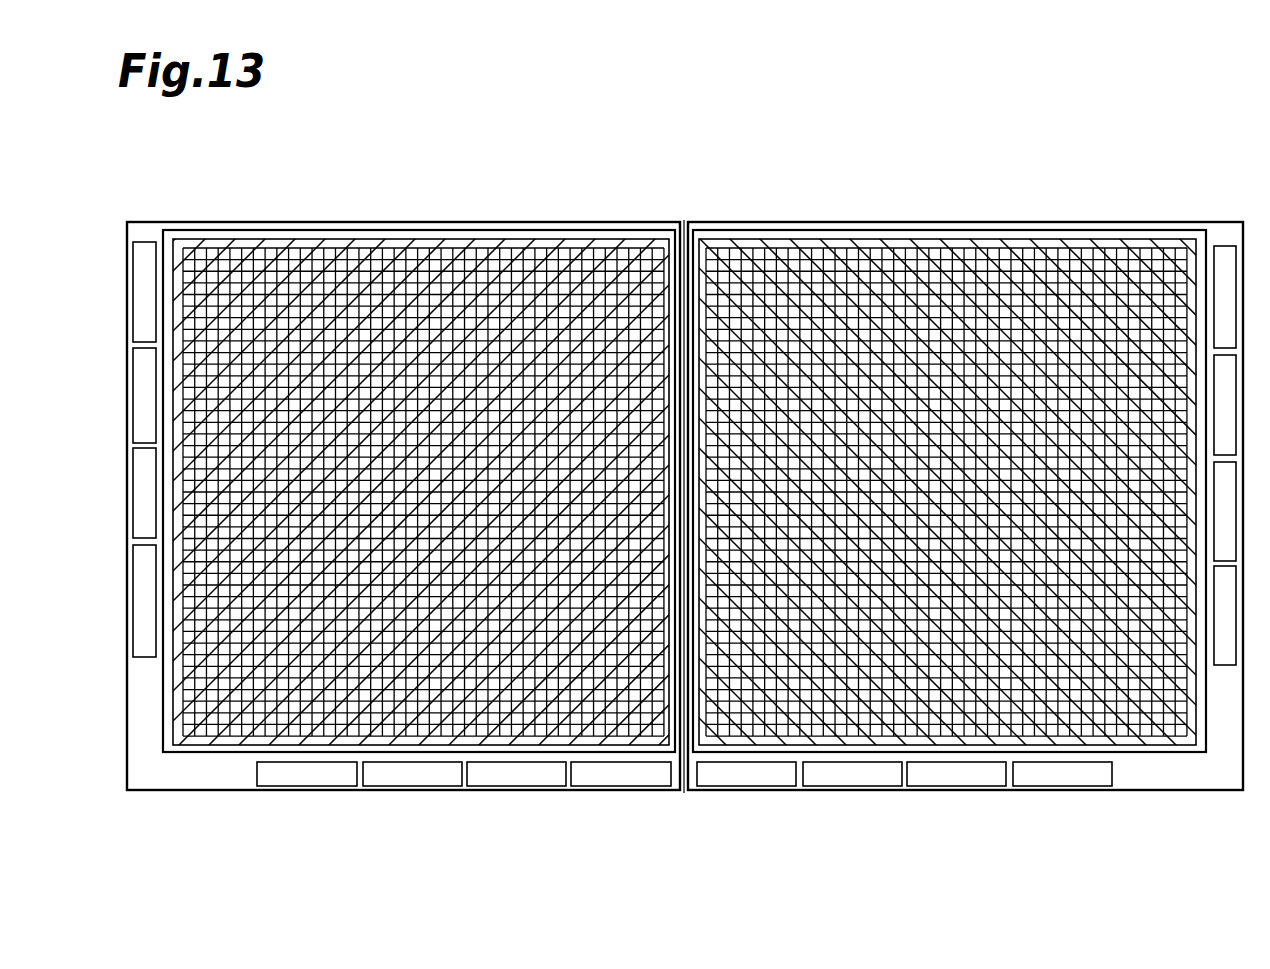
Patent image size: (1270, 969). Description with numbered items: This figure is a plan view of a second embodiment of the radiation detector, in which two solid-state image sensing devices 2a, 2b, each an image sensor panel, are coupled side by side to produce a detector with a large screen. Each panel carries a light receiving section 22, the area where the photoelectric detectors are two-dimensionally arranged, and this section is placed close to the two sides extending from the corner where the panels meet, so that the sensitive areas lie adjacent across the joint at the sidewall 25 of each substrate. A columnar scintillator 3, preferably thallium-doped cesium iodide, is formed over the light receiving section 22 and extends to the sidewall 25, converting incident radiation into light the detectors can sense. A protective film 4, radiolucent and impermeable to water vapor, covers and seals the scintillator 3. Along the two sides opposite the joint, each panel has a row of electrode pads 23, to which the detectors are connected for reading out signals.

The solid-state image sensing device 2a is at (403, 441).
The solid-state image sensing device 2b is at (1000, 223).
The scintillator 3 is at (473, 247).
The protective film 4 is at (535, 235).
The light receiving section 22 is at (567, 245).
The electrode pad 23 is at (305, 772).
The sidewall 25 is at (688, 223).